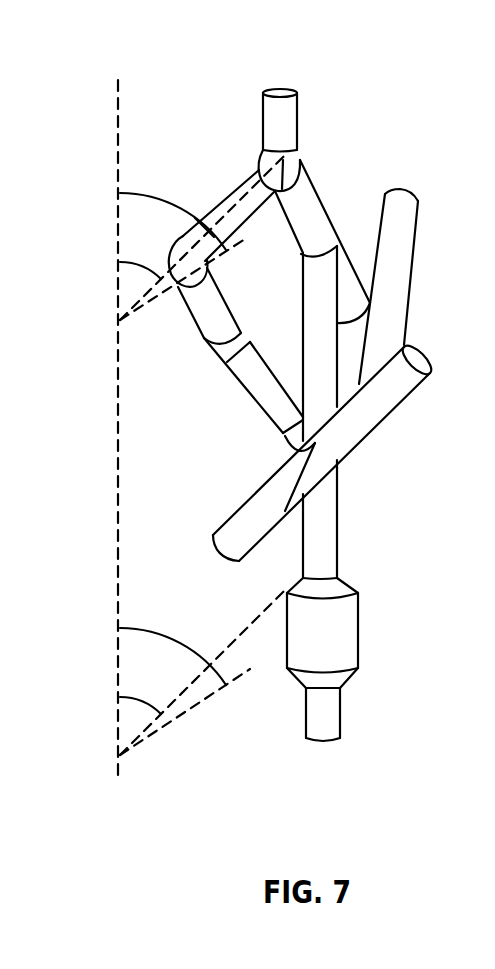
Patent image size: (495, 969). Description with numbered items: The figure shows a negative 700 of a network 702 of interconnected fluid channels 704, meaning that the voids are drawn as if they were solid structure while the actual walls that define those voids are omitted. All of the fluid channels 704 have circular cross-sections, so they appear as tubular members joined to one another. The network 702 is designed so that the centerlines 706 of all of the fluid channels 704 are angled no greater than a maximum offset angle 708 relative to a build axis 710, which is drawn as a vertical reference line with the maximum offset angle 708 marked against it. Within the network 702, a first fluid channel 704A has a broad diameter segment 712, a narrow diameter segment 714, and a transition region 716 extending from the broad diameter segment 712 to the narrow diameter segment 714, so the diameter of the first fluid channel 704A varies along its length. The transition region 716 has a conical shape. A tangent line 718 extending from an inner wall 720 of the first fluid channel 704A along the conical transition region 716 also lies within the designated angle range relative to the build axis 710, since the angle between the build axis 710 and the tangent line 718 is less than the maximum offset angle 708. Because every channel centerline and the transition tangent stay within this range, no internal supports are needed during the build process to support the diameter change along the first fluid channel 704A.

The negative 700 is at (372, 112).
The network 702 is at (316, 188).
The fluid channels 704 is at (244, 184).
The first fluid channel 704A is at (335, 526).
The centerlines 706 is at (235, 203).
The maximum offset angle 708 is at (134, 193).
The build axis 710 is at (118, 104).
The broad diameter segment 712 is at (348, 653).
The narrow diameter segment 714 is at (331, 557).
The transition region 716 is at (348, 590).
The tangent line 718 is at (237, 643).
The inner wall 720 is at (288, 581).